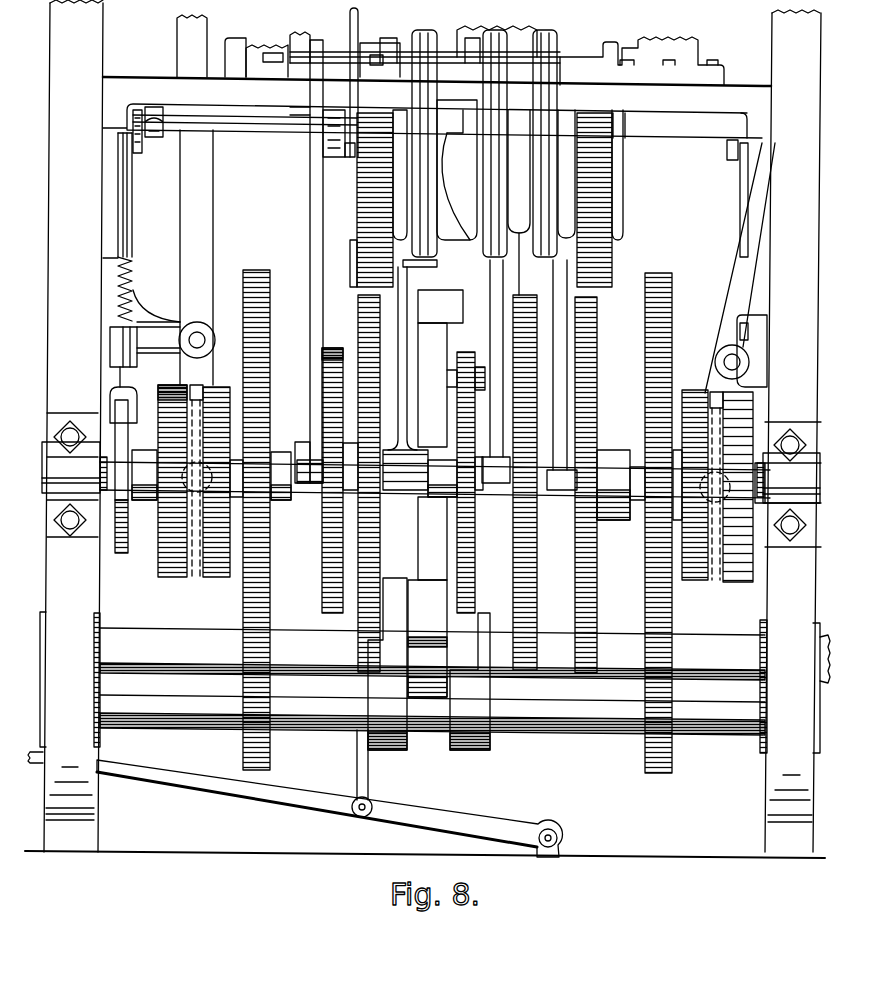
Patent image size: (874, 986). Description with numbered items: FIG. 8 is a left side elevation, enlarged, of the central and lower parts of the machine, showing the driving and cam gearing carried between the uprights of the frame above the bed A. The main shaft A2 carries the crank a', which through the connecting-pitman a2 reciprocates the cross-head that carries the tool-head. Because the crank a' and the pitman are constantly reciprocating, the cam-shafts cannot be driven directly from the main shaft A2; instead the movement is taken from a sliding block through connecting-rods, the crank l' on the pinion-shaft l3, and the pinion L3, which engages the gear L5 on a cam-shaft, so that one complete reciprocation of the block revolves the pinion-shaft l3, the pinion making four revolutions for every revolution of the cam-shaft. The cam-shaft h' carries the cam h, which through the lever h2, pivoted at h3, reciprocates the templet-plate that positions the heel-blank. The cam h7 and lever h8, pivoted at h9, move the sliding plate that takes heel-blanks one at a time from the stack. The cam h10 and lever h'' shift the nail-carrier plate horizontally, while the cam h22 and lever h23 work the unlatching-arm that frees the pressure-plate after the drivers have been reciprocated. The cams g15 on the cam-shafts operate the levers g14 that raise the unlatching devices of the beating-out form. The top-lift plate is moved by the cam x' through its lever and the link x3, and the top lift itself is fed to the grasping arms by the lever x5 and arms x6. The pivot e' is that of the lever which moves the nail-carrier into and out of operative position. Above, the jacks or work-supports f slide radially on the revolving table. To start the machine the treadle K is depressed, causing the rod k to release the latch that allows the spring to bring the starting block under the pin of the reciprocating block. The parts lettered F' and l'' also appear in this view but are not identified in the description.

The jacks or work-supports f is at (263, 46).
The lever h2 is at (432, 30).
The frame plate F' is at (507, 55).
The bed A is at (432, 112).
The lever x5 is at (735, 228).
The link x3 is at (482, 160).
The levers g14 is at (483, 337).
The lever h'' is at (565, 260).
The lever h23 is at (320, 245).
The lever h8 is at (196, 257).
The pivot e' is at (359, 200).
The pivot h3 is at (405, 191).
The pivot h9 is at (205, 340).
The cam h7 is at (160, 393).
The cam-shaft h' is at (307, 481).
The gear L5 is at (648, 578).
The cam h22 is at (335, 467).
The cam h is at (369, 483).
The cams g15 is at (470, 482).
The cam h10 is at (559, 484).
The arms x6 is at (707, 392).
The connecting-pitman a2 is at (435, 493).
The cam x' is at (484, 533).
The crank l' is at (387, 664).
The crank a' is at (474, 665).
The plate l'' is at (463, 703).
The main shaft A2 is at (320, 735).
The pinion-shaft l3 is at (432, 715).
The pinion L3 is at (243, 756).
The treadle K is at (330, 808).
The rod k is at (365, 773).